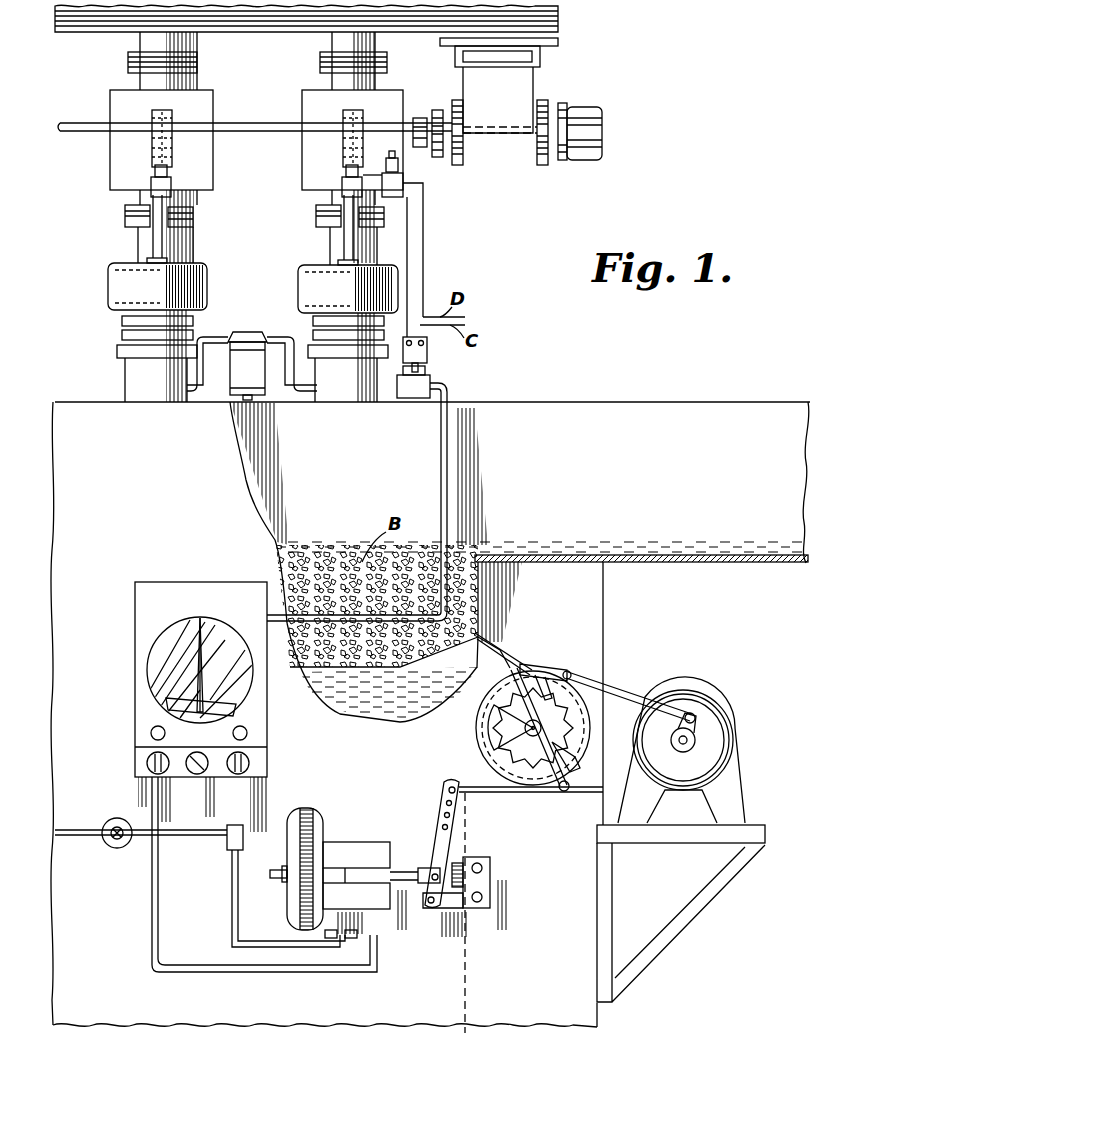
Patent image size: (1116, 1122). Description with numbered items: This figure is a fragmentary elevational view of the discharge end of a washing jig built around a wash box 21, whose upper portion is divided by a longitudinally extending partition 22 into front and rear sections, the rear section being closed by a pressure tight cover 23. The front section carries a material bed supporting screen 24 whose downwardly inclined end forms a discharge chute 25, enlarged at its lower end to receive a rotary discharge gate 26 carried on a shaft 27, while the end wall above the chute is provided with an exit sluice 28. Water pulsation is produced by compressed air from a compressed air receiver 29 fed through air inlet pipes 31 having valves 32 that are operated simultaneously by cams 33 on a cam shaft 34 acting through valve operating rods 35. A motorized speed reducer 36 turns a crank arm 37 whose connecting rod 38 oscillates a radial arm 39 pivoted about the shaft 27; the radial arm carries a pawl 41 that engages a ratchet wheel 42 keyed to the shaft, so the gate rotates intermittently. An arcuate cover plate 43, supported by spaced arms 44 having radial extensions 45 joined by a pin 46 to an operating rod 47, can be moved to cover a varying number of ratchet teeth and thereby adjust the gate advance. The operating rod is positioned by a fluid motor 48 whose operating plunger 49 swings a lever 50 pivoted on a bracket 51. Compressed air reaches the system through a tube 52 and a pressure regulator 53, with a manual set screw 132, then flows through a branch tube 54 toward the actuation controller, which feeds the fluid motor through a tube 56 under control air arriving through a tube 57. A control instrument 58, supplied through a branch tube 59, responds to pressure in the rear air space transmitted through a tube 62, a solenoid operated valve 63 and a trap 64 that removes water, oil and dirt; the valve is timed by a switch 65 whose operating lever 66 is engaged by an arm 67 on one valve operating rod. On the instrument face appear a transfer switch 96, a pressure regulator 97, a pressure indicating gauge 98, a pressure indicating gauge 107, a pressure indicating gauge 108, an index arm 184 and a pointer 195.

The wash box 21 is at (300, 1012).
The partition 22 is at (358, 473).
The pressure tight cover 23 is at (86, 400).
The material bed supporting screen 24 is at (384, 694).
The discharge chute 25 is at (443, 690).
The rotary discharge gate 26 is at (588, 740).
The shaft 27 is at (545, 722).
The exit sluice 28 is at (590, 557).
The compressed air receiver 29 is at (558, 20).
The air inlet pipes 31 is at (145, 240).
The valves 32 is at (118, 284).
The cams 33 is at (176, 153).
The cam shaft 34 is at (252, 124).
The valve operating rods 35 is at (170, 243).
The motorized speed reducer 36 is at (700, 692).
The crank arm 37 is at (700, 735).
The connecting rod 38 is at (622, 692).
The radial arm 39 is at (552, 664).
The pawl 41 is at (571, 673).
The ratchet wheel 42 is at (545, 792).
The cover plate 43 is at (518, 660).
The arms 44 is at (505, 735).
The radial extensions 45 is at (578, 762).
The pin 46 is at (566, 794).
The operating rod 47 is at (515, 795).
The fluid motor 48 is at (326, 820).
The operating plunger 49 is at (407, 868).
The lever 50 is at (437, 810).
The bracket 51 is at (492, 876).
The tube 52 is at (82, 822).
The pressure regulator 53 is at (108, 848).
The branch tube 54 is at (232, 886).
The tube 56 is at (275, 880).
The tube 57 is at (152, 915).
The control instrument 58 is at (126, 689).
The branch tube 59 is at (240, 824).
The tube 62 is at (458, 410).
The solenoid operated valve 63 is at (430, 378).
The trap 64 is at (244, 332).
The switch 65 is at (400, 194).
The operating lever 66 is at (398, 165).
The arm 67 is at (372, 172).
The transfer switch 96 is at (140, 765).
The pressure regulator 97 is at (257, 765).
The pressure indicating gauge 98 is at (197, 775).
The pressure indicating gauge 107 is at (248, 733).
The pressure indicating gauge 108 is at (150, 733).
The manual set screw 132 is at (133, 800).
The index arm 184 is at (200, 688).
The pointer 195 is at (207, 698).